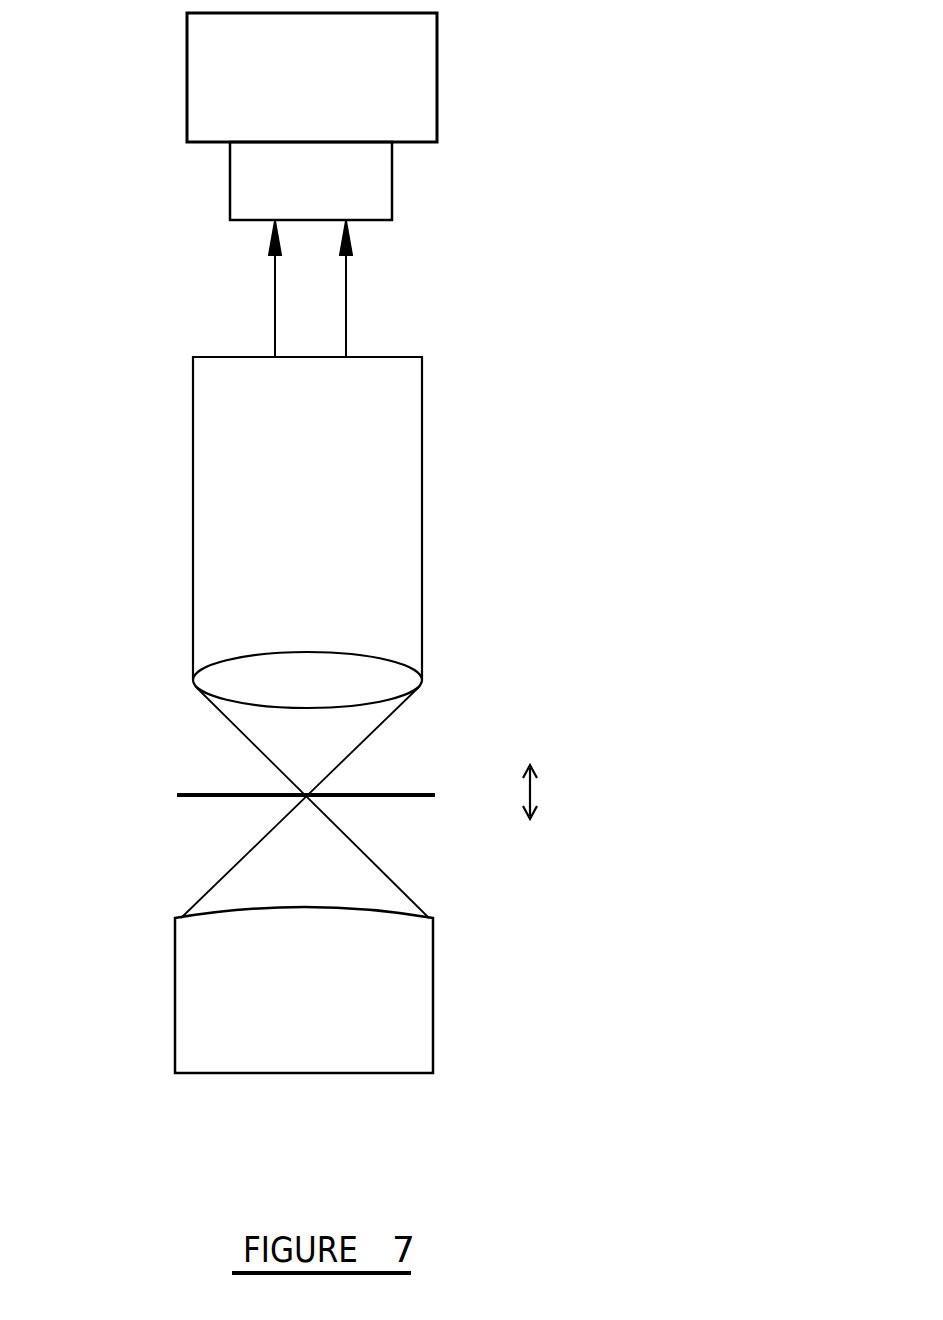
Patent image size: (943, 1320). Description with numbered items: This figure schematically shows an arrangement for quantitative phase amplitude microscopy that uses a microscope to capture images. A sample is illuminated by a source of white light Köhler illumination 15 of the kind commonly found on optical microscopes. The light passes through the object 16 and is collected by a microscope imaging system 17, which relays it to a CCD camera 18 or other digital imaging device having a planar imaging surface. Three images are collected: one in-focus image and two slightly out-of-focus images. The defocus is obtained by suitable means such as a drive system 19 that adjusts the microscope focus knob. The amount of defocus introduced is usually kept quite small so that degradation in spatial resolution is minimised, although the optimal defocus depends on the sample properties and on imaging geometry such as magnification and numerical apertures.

The source of white light Köhler illumination 15 is at (232, 1073).
The object 16 is at (197, 793).
The microscope imaging system 17 is at (192, 490).
The CCD camera 18 is at (436, 116).
The drive system 19 is at (433, 808).